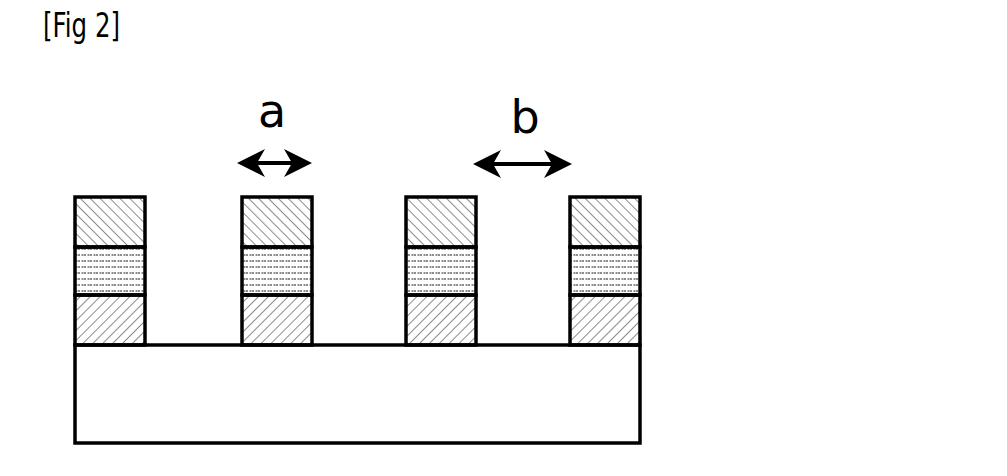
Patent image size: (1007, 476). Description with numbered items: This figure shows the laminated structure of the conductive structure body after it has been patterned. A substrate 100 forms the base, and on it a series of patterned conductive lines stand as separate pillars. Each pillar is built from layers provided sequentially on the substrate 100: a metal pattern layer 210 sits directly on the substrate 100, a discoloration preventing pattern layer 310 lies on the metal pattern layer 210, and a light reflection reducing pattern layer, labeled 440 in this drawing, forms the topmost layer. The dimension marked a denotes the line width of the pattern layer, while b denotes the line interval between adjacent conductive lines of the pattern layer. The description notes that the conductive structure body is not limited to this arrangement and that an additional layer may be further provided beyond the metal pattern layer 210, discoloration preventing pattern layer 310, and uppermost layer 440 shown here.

The substrate 100 is at (643, 393).
The metal pattern layer 210 is at (643, 320).
The discoloration preventing pattern layer 310 is at (643, 273).
The third layer 440 is at (643, 223).